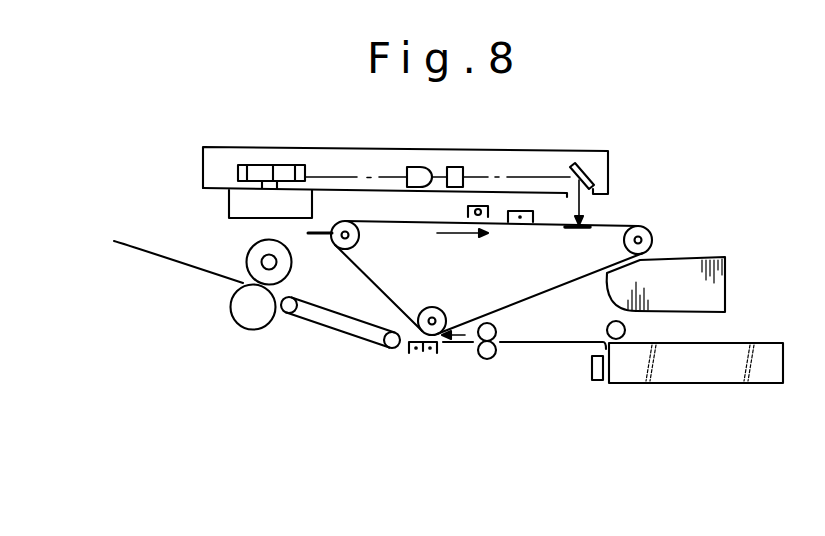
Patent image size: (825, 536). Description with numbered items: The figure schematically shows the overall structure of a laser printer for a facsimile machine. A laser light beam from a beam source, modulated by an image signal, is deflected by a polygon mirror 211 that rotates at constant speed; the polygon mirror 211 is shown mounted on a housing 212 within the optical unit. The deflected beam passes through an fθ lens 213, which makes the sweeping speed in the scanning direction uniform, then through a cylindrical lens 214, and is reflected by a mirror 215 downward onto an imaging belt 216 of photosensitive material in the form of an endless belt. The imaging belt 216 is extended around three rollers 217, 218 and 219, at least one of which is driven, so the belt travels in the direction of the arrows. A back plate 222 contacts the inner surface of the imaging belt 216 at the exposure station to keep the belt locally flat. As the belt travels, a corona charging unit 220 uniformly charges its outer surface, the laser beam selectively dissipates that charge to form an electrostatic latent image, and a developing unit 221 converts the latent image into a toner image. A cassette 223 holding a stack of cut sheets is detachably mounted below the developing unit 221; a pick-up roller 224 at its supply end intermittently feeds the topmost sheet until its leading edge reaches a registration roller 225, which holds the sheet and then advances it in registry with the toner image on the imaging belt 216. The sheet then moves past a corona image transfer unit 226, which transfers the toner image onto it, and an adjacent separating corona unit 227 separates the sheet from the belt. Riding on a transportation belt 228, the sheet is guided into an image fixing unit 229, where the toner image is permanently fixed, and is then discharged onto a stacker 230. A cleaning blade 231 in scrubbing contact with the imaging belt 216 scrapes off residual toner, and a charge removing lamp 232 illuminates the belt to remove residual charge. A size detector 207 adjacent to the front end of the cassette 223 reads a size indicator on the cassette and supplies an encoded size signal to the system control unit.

The size detector 207 is at (597, 382).
The polygon mirror 211 is at (290, 165).
The housing 212 is at (229, 204).
The fθ lens 213 is at (420, 167).
The cylindrical lens 214 is at (455, 167).
The mirror 215 is at (583, 163).
The imaging belt 216 is at (617, 225).
The roller 217 is at (360, 236).
The roller 218 is at (650, 232).
The roller 219 is at (432, 307).
The corona charging unit 220 is at (509, 222).
The developing unit 221 is at (726, 280).
The back plate 222 is at (574, 230).
The cassette 223 is at (752, 343).
The pick-up roller 224 is at (607, 328).
The registration roller 225 is at (495, 355).
The corona image transfer unit 226 is at (432, 355).
The separating corona unit 227 is at (406, 352).
The transportation belt 228 is at (310, 322).
The image fixing unit 229 is at (250, 254).
The stacker 230 is at (193, 268).
The cleaning blade 231 is at (323, 240).
The charge removing lamp 232 is at (468, 210).